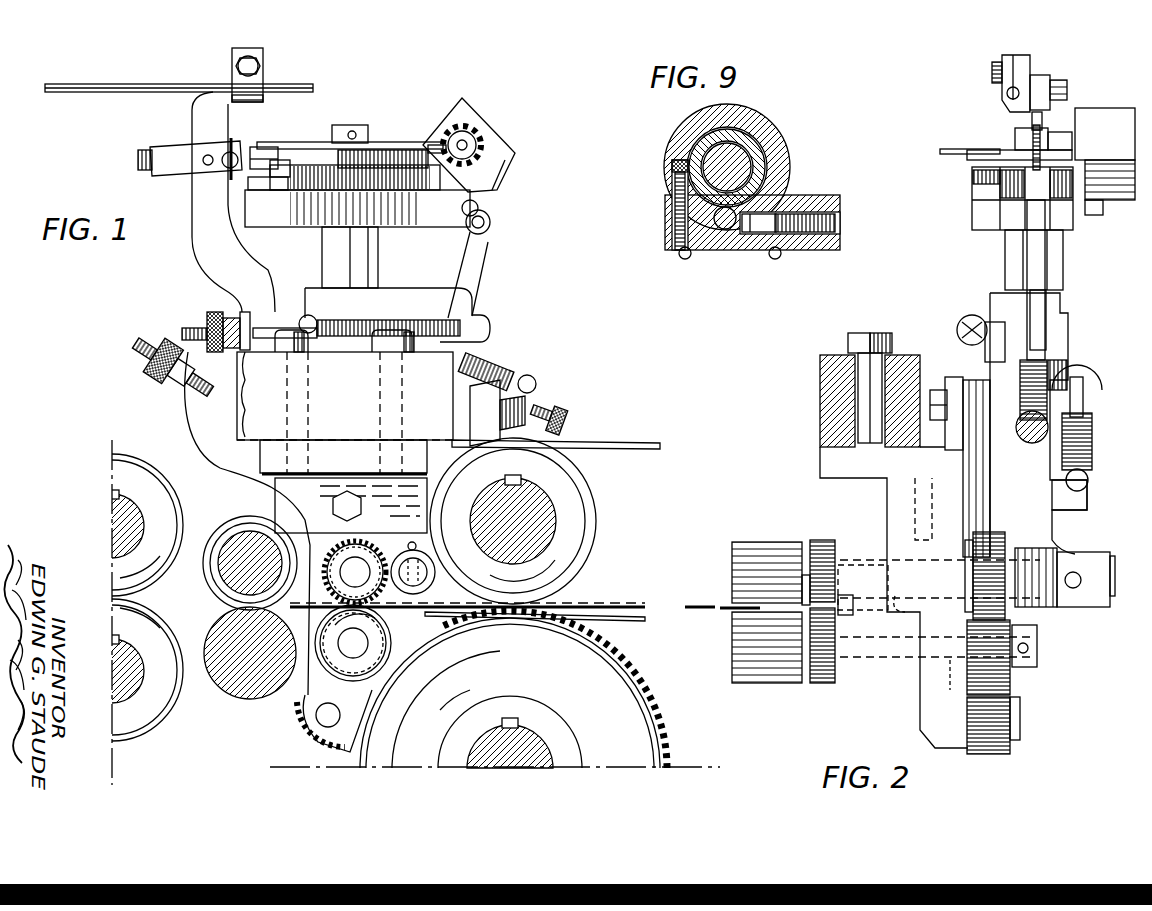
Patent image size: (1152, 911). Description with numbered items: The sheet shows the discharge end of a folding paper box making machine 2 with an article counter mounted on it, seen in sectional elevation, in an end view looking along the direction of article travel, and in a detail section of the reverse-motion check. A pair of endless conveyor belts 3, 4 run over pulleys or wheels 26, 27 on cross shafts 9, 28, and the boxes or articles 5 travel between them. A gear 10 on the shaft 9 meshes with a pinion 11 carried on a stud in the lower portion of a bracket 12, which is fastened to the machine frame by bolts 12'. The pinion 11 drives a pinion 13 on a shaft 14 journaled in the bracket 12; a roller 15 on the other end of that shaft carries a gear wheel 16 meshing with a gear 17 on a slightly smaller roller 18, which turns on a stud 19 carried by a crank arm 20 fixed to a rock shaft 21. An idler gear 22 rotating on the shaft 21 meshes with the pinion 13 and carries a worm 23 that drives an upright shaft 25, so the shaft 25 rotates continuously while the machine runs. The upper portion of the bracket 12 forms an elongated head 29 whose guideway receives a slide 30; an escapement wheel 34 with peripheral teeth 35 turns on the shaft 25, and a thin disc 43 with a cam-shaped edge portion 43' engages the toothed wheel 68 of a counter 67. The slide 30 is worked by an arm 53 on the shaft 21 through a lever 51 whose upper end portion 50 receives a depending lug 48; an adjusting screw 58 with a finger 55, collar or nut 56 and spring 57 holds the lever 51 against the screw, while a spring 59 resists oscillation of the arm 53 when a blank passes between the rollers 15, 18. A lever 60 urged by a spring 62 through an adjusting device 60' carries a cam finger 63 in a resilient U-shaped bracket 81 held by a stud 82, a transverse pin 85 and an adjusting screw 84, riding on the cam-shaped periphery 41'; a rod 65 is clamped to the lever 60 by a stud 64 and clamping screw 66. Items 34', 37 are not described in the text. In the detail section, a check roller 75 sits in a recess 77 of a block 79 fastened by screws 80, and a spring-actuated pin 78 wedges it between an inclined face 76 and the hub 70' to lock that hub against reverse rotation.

In FIG. 1, the paper box making machine 2 is at (255, 418).
In FIG. 2, the paper box making machine 2 is at (825, 403).
In FIG. 1, the endless conveyor belt 3 is at (614, 618).
In FIG. 1, the endless conveyor belt 4 is at (625, 449).
In FIG. 1, the boxes or articles 5 is at (690, 605).
In FIG. 1, the cross shaft 9 is at (530, 740).
In FIG. 1, the gear 10 is at (655, 730).
In FIG. 1, the pinion 11 is at (305, 742).
In FIG. 2, the pinion 11 is at (1016, 716).
In FIG. 1, the bracket 12 is at (337, 483).
In FIG. 9, the bracket 12 is at (729, 158).
In FIG. 2, the bracket 12 is at (953, 520).
In FIG. 2, the bolts 12' is at (870, 367).
In FIG. 2, the pinion 13 is at (1010, 688).
In FIG. 1, the shaft 14 is at (358, 645).
In FIG. 2, the shaft 14 is at (1036, 648).
In FIG. 1, the roller 15 is at (367, 655).
In FIG. 2, the roller 15 is at (772, 670).
In FIG. 2, the gear wheel 16 is at (820, 684).
In FIG. 1, the gear 17 is at (294, 546).
In FIG. 2, the gear 17 is at (825, 545).
In FIG. 1, the roller 18 is at (345, 547).
In FIG. 2, the roller 18 is at (762, 548).
In FIG. 1, the stud 19 is at (357, 565).
In FIG. 1, the crank arm 20 is at (395, 548).
In FIG. 2, the crank arm 20 is at (860, 575).
In FIG. 1, the rock shaft 21 is at (425, 570).
In FIG. 2, the rock shaft 21 is at (1110, 550).
In FIG. 2, the idler gear 22 is at (990, 580).
In FIG. 2, the worm 23 is at (1040, 605).
In FIG. 9, the upright shaft 25 is at (715, 160).
In FIG. 1, the pulley or wheel 26 is at (625, 672).
In FIG. 1, the pulley or wheel 27 is at (595, 516).
In FIG. 1, the cross shaft 28 is at (540, 510).
In FIG. 1, the elongated head 29 is at (426, 216).
In FIG. 2, the elongated head 29 is at (975, 222).
In FIG. 2, the slide 30 is at (1030, 205).
In FIG. 1, the escapement wheel 34 is at (267, 197).
In FIG. 2, the escapement wheel 34 is at (961, 183).
In FIG. 1, the collar 34' is at (220, 207).
In FIG. 1, the teeth 35 is at (328, 180).
In FIG. 2, the teeth 35 is at (1000, 185).
In FIG. 1, the block 37 is at (352, 125).
In FIG. 2, the block 37 is at (1018, 130).
In FIG. 1, the cam-shaped periphery 41' is at (350, 132).
In FIG. 2, the cam-shaped periphery 41' is at (986, 165).
In FIG. 1, the thin disc 43 is at (383, 139).
In FIG. 2, the thin disc 43 is at (959, 132).
In FIG. 1, the cam-shaped edge portion 43' is at (445, 107).
In FIG. 1, the depending lug 48 is at (478, 205).
In FIG. 1, the upper end portion 50 is at (490, 222).
In FIG. 2, the upper end portion 50 is at (1050, 240).
In FIG. 1, the lever 51 is at (476, 255).
In FIG. 2, the lever 51 is at (1046, 278).
In FIG. 1, the arm 53 is at (438, 440).
In FIG. 2, the arm 53 is at (1045, 500).
In FIG. 1, the finger 55 is at (530, 380).
In FIG. 1, the collar or nut 56 is at (528, 408).
In FIG. 1, the spring 57 is at (492, 362).
In FIG. 2, the spring 57 is at (1045, 365).
In FIG. 1, the adjusting screw 58 is at (565, 412).
In FIG. 2, the adjusting screw 58 is at (1040, 412).
In FIG. 2, the spring 59 is at (1092, 440).
In FIG. 1, the lever 60 is at (225, 202).
In FIG. 2, the lever 60 is at (1058, 75).
In FIG. 1, the adjusting device 60' is at (194, 322).
In FIG. 1, the spring 62 is at (355, 320).
In FIG. 2, the spring 62 is at (960, 320).
In FIG. 1, the cam engaging member or finger 63 is at (262, 147).
In FIG. 1, the stud 64 is at (232, 55).
In FIG. 2, the stud 64 is at (1000, 72).
In FIG. 1, the rod 65 is at (63, 84).
In FIG. 2, the rod 65 is at (1006, 92).
In FIG. 1, the clamping screw 66 is at (256, 62).
In FIG. 2, the clamping screw 66 is at (990, 62).
In FIG. 1, the counter 67 is at (493, 138).
In FIG. 2, the counter 67 is at (1090, 112).
In FIG. 1, the toothed wheel 68 is at (470, 134).
In FIG. 2, the toothed wheel 68 is at (1040, 130).
In FIG. 9, the hub 70' is at (758, 160).
In FIG. 9, the check roller 75 is at (725, 232).
In FIG. 9, the inclined wall or face 76 is at (705, 238).
In FIG. 9, the recess 77 is at (700, 222).
In FIG. 9, the spring-actuated pin 78 is at (785, 234).
In FIG. 9, the block 79 is at (825, 250).
In FIG. 9, the screws 80 is at (680, 256).
In FIG. 1, the resilient U-shaped bracket 81 is at (172, 150).
In FIG. 1, the stud 82 is at (138, 158).
In FIG. 1, the adjusting screw 84 is at (224, 166).
In FIG. 1, the transverse pin 85 is at (205, 164).